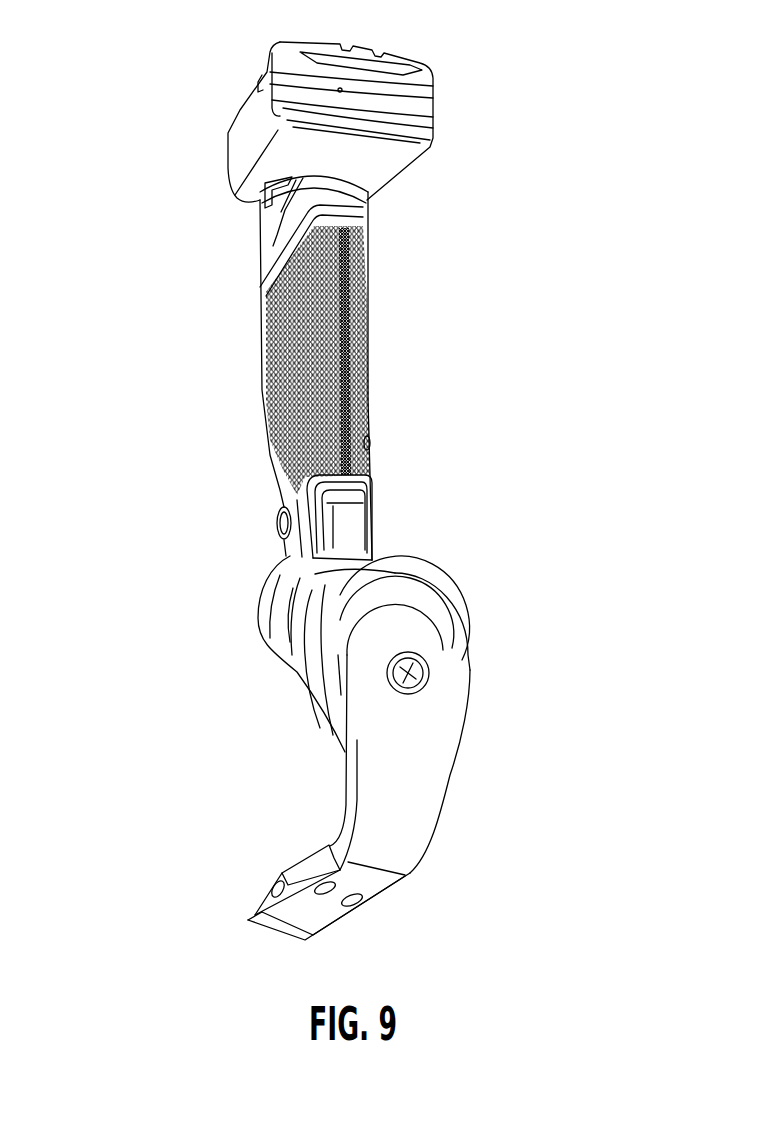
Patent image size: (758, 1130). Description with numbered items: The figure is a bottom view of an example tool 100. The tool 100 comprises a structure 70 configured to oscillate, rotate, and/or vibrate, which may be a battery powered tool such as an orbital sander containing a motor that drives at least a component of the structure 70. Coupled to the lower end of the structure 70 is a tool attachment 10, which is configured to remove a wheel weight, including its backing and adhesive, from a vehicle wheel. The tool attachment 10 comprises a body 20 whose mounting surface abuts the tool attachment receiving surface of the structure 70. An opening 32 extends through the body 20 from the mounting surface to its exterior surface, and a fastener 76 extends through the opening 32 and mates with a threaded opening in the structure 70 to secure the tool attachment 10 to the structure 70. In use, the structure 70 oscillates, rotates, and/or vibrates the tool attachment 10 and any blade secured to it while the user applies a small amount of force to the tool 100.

The tool 100 is at (162, 125).
The structure 70 is at (372, 418).
The tool attachment 10 is at (305, 778).
The opening 32 is at (425, 642).
The fastener 76 is at (413, 683).
The body 20 is at (410, 813).